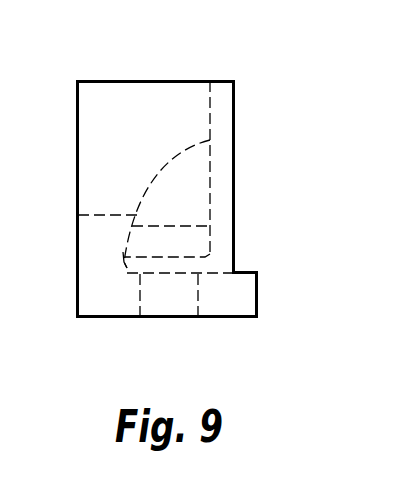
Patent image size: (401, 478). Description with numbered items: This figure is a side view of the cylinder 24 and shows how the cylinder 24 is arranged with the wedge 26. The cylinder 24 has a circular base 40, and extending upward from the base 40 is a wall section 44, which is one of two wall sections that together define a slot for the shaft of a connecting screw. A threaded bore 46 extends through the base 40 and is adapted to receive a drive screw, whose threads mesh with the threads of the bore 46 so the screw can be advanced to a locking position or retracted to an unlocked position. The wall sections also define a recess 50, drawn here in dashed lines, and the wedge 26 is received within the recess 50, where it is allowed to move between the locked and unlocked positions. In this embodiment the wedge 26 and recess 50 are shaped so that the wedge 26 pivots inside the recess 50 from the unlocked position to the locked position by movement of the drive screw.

The cylinder 24 is at (250, 107).
The wedge 26 is at (183, 187).
The circular base 40 is at (227, 292).
The wall section 44 is at (123, 113).
The threaded bore 46 is at (168, 292).
The recess 50 is at (125, 267).